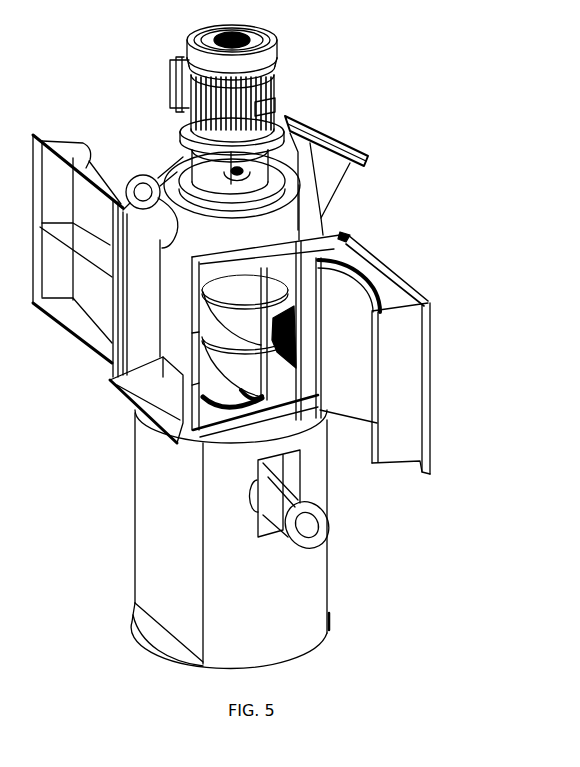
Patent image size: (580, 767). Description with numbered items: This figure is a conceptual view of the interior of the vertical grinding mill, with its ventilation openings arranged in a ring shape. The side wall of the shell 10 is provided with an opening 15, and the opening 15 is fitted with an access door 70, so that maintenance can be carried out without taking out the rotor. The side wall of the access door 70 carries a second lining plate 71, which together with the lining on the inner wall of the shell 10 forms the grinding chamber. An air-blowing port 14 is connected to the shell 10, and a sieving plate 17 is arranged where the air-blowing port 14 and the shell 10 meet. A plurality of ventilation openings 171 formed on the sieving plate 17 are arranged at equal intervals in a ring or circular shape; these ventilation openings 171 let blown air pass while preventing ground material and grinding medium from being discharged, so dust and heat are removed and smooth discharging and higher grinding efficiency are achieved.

The shell 10 is at (180, 305).
The air-blowing port 14 is at (288, 500).
The opening 15 is at (268, 224).
The sieving plate 17 is at (353, 408).
The ventilation opening 171 is at (268, 392).
The access door 70 is at (405, 346).
The second lining plate 71 is at (350, 277).